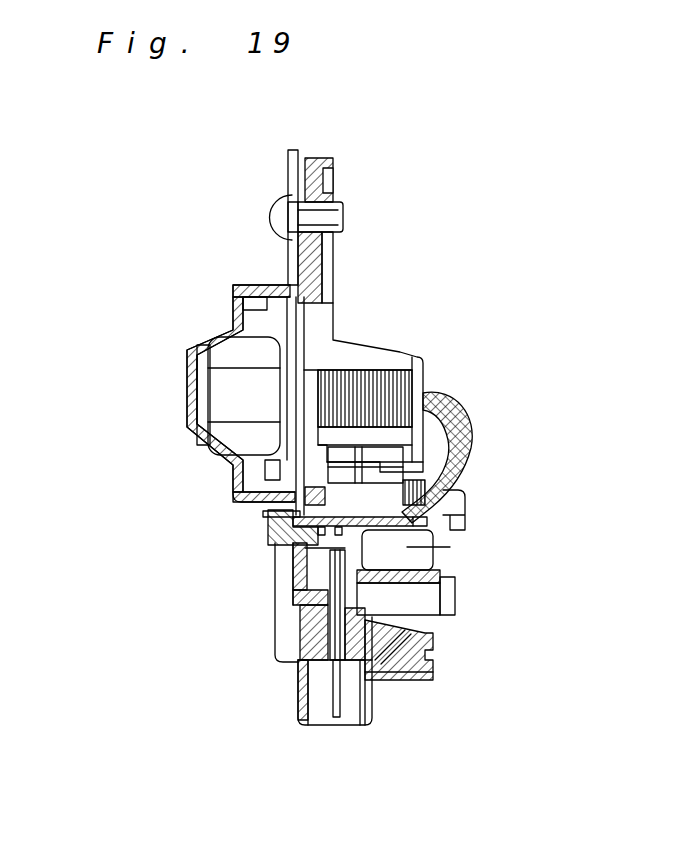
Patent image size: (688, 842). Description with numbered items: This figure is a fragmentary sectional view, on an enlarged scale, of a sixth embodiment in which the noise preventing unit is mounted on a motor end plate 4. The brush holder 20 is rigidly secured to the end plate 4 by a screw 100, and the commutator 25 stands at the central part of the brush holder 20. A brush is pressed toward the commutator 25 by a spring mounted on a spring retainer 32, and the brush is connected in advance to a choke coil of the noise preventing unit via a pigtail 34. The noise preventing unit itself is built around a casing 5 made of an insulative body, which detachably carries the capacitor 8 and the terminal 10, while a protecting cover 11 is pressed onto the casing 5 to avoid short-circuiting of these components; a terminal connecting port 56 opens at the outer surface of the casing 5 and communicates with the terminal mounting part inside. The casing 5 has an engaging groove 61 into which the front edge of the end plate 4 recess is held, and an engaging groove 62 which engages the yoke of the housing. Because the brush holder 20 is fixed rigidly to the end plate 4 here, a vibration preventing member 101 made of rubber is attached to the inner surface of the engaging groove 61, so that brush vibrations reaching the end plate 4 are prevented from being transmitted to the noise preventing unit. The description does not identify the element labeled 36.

The brush holder 20 is at (333, 192).
The screw 100 is at (269, 216).
The end plate 4 is at (240, 288).
The inner body 36 is at (232, 357).
The commutator 25 is at (388, 347).
The pigtail 34 is at (465, 460).
The vibration preventing member 101 is at (263, 513).
The engaging groove 61 is at (265, 528).
The protecting cover 11 is at (267, 552).
The spring retainer 32 is at (457, 537).
The capacitor 8 is at (410, 550).
The casing 5 is at (302, 653).
The terminal 10 is at (322, 680).
The terminal connecting port 56 is at (345, 713).
The engaging groove 62 is at (437, 655).